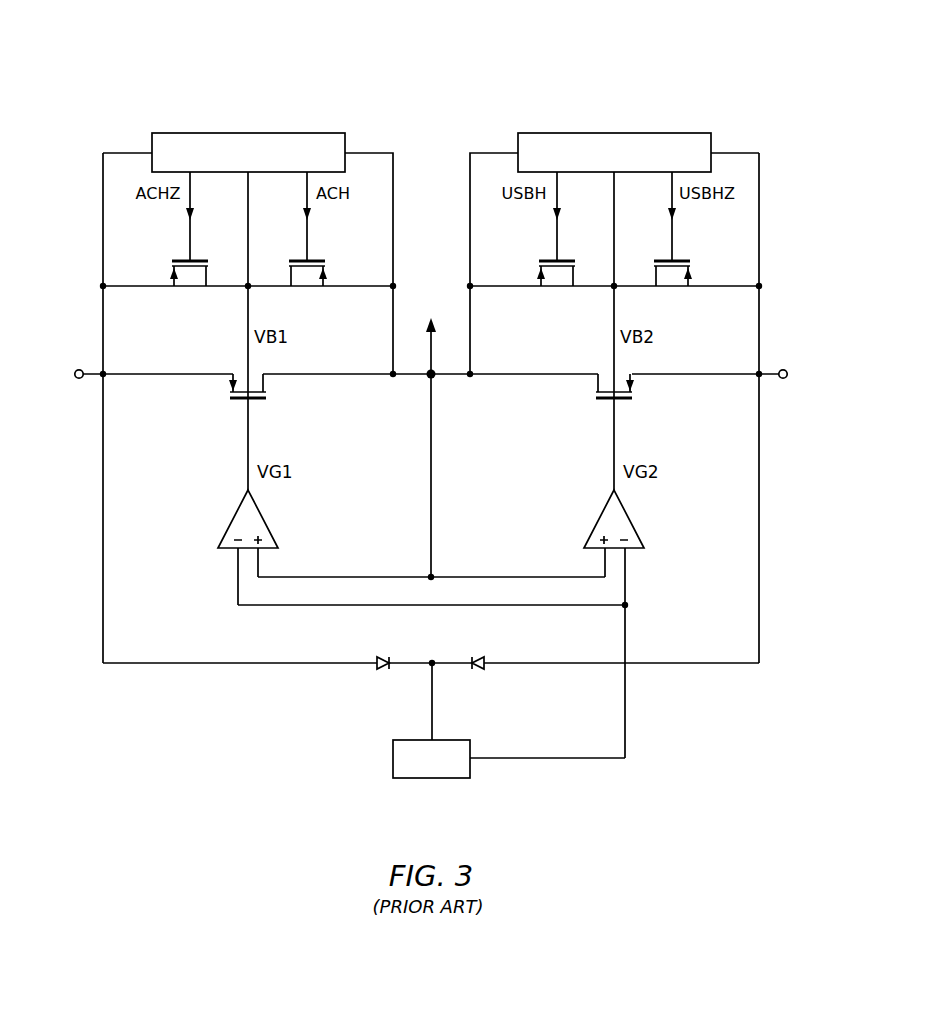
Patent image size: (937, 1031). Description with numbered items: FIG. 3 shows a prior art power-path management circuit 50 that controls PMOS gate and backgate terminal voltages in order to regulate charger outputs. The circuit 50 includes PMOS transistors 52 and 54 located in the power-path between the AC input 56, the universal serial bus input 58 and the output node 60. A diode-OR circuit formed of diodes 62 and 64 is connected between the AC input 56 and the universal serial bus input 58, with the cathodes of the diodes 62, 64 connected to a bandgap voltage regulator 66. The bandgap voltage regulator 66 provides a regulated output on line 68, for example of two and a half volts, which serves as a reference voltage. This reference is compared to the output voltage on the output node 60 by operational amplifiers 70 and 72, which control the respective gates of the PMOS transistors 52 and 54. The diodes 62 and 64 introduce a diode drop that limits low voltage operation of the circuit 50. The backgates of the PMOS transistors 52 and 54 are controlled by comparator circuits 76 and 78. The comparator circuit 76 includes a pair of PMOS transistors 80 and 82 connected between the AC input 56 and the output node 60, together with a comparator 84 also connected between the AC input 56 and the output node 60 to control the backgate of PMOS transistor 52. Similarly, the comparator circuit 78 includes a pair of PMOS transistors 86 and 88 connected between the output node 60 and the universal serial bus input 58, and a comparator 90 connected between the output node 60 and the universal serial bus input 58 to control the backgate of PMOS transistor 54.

The circuit 50 is at (543, 50).
The PMOS transistor 52 is at (239, 403).
The PMOS transistor 54 is at (605, 403).
The AC input 56 is at (78, 369).
The USB input 58 is at (782, 368).
The output node 60 is at (438, 379).
The diode 62 is at (382, 670).
The diode 64 is at (481, 670).
The bandgap voltage regulator 66 is at (427, 779).
The line 68 is at (554, 760).
The operational amplifier 70 is at (231, 518).
The operational amplifier 72 is at (597, 518).
The comparator circuit 76 is at (375, 118).
The comparator circuit 78 is at (743, 118).
The PMOS transistor 80 is at (197, 260).
The PMOS transistor 82 is at (301, 260).
The comparator 84 is at (237, 133).
The PMOS transistor 86 is at (564, 260).
The PMOS transistor 88 is at (666, 260).
The comparator 90 is at (626, 133).